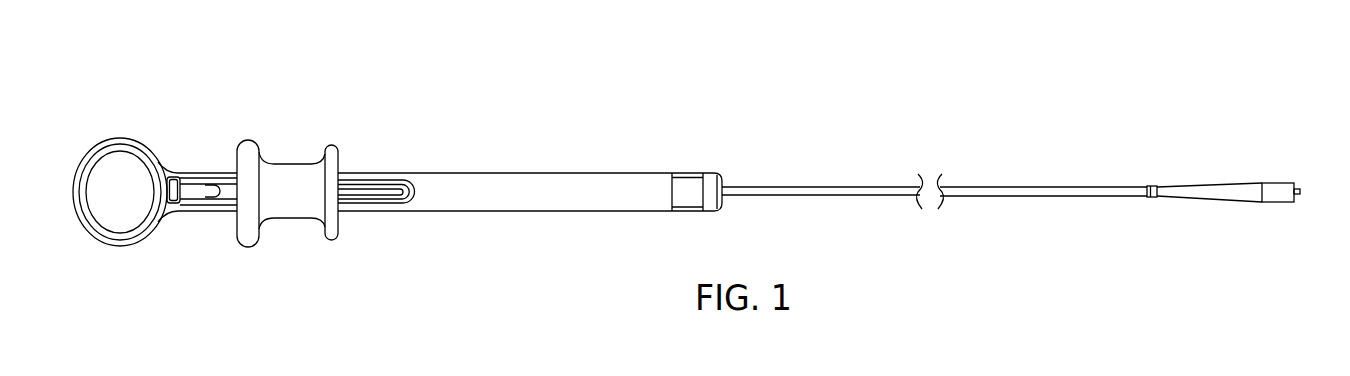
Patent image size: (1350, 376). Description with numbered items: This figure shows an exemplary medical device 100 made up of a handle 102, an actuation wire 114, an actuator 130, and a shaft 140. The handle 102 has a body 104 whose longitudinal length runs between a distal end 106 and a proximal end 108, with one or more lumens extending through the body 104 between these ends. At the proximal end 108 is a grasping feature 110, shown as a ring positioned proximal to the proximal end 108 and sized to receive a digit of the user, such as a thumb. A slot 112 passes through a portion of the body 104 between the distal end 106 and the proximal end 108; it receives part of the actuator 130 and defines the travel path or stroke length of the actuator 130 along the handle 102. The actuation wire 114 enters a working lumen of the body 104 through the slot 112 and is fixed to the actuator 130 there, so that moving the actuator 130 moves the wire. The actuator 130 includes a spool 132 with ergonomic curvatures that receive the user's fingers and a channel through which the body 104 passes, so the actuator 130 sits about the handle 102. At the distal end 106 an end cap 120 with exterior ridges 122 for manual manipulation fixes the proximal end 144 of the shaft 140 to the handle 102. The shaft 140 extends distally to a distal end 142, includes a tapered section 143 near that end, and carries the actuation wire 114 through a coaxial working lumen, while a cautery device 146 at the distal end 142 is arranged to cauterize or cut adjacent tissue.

The medical device 100 is at (131, 71).
The handle 102 is at (564, 130).
The body 104 is at (501, 185).
The distal end 106 is at (640, 200).
The proximal end 108 is at (176, 189).
The grasping feature 110 is at (121, 246).
The slot 112 is at (219, 198).
The actuation wire 114 is at (374, 189).
The end cap 120 is at (709, 165).
The ridges 122 is at (685, 175).
The actuator 130 is at (246, 256).
The spool 132 is at (293, 214).
The shaft 140 is at (864, 175).
The distal end 142 is at (1215, 200).
The tapered section 143 is at (1182, 179).
The proximal end 144 is at (820, 197).
The cautery device 146 is at (1290, 174).